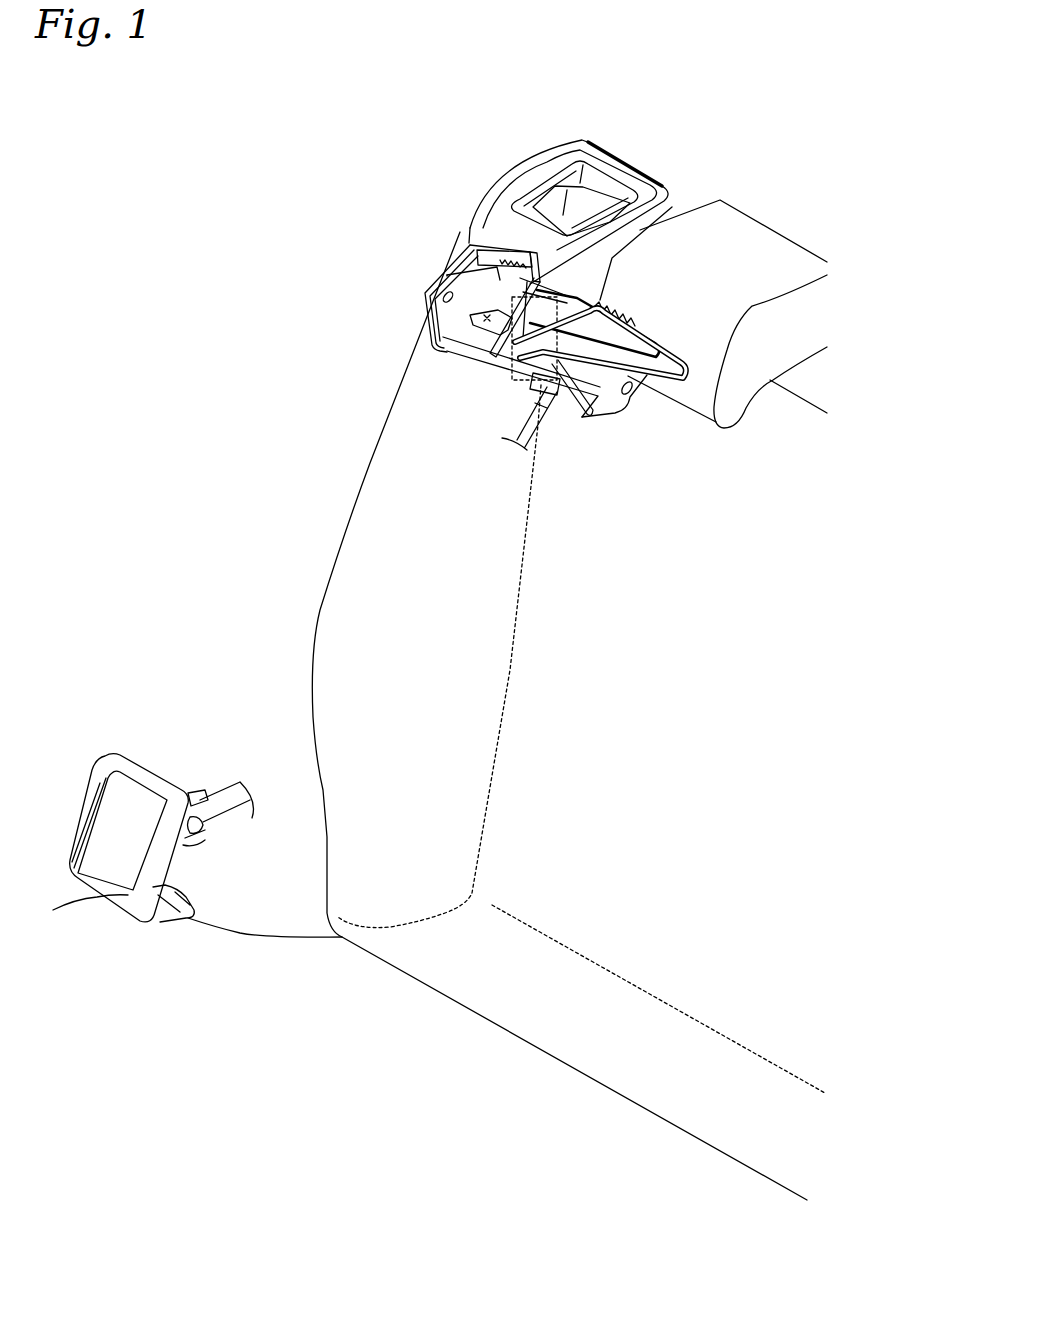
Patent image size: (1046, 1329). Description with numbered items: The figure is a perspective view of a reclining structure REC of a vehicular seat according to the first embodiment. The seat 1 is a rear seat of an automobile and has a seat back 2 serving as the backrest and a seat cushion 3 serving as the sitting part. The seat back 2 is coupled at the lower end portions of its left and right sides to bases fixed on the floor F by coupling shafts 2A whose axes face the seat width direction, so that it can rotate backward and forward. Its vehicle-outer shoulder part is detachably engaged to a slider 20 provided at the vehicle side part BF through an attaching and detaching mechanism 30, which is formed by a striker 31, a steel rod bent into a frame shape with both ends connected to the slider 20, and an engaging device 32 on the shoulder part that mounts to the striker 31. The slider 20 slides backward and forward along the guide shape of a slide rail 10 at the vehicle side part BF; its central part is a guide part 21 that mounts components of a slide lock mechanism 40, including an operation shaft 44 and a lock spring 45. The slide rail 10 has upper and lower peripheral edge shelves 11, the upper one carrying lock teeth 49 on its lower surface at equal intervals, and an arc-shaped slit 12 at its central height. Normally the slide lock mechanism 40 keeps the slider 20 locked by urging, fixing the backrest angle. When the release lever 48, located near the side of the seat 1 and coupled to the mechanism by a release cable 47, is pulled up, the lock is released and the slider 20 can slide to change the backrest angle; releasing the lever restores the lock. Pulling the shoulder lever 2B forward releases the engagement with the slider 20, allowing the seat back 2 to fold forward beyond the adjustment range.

The seat 1 is at (283, 248).
The seat back 2 is at (350, 520).
The coupling shaft 2A is at (402, 865).
The shoulder lever 2B is at (573, 215).
The seat cushion 3 is at (259, 938).
The slide rail 10 is at (460, 250).
The peripheral edge shelf 11 is at (486, 258).
The slit 12 is at (480, 320).
The slider 20 is at (653, 207).
The guide part 21 is at (598, 267).
The attaching and detaching mechanism 30 is at (530, 300).
The engaging device 32 is at (479, 206).
The striker 31 is at (663, 372).
The slide lock mechanism 40 is at (546, 270).
The operation shaft 44 is at (540, 392).
The lock spring 45 is at (513, 367).
The release cable 47 is at (527, 417).
The release lever 48 is at (117, 813).
The lock teeth 49 is at (447, 275).
The reclining structure REC is at (446, 206).
The vehicle side part BF is at (312, 430).
The floor F is at (300, 1022).